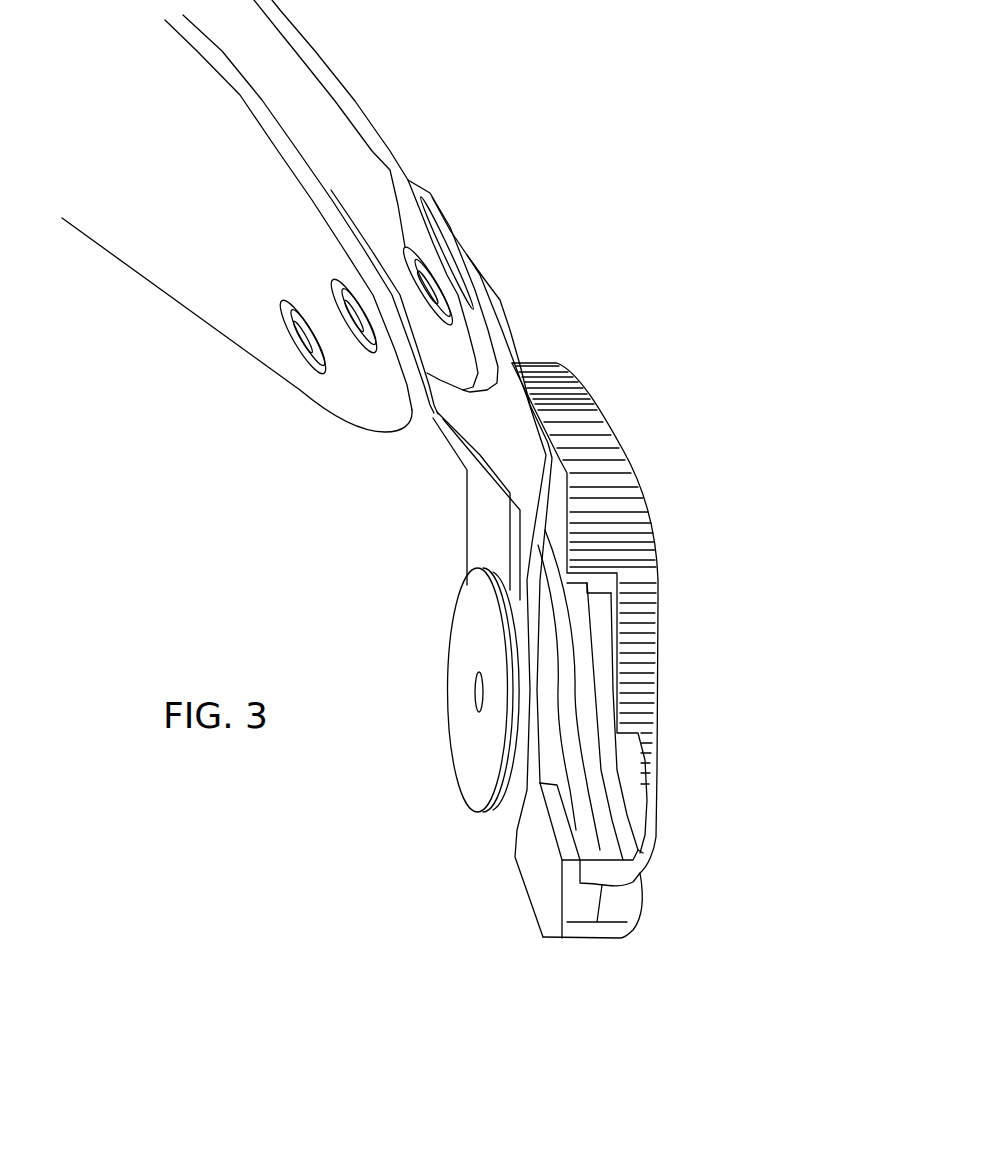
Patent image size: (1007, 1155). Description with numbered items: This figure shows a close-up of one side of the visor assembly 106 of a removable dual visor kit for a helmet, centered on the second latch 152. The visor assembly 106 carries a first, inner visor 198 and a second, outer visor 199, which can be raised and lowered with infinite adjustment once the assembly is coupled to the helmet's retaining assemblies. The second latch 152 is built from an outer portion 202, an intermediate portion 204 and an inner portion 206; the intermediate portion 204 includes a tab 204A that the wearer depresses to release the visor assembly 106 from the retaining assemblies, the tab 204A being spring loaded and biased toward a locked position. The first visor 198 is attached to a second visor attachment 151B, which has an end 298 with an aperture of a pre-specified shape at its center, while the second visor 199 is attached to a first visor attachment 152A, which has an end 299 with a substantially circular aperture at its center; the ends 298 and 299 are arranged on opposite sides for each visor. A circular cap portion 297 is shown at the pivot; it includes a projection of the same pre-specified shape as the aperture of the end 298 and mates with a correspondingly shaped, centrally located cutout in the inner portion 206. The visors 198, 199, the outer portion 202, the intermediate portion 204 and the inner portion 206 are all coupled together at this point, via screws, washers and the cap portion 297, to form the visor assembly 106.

The visor assembly 106 is at (360, 96).
The second visor 199 is at (401, 163).
The first visor 198 is at (172, 293).
The second latch 152 is at (617, 351).
The outer portion 202 is at (657, 765).
The cap portion 297 is at (462, 800).
The end 298 is at (435, 705).
The second visor attachment 151B is at (476, 506).
The end 299 is at (489, 615).
The first visor attachment 152A is at (518, 812).
The inner portion 206 is at (543, 937).
The intermediate portion 204 is at (573, 942).
The tab 204A is at (620, 907).